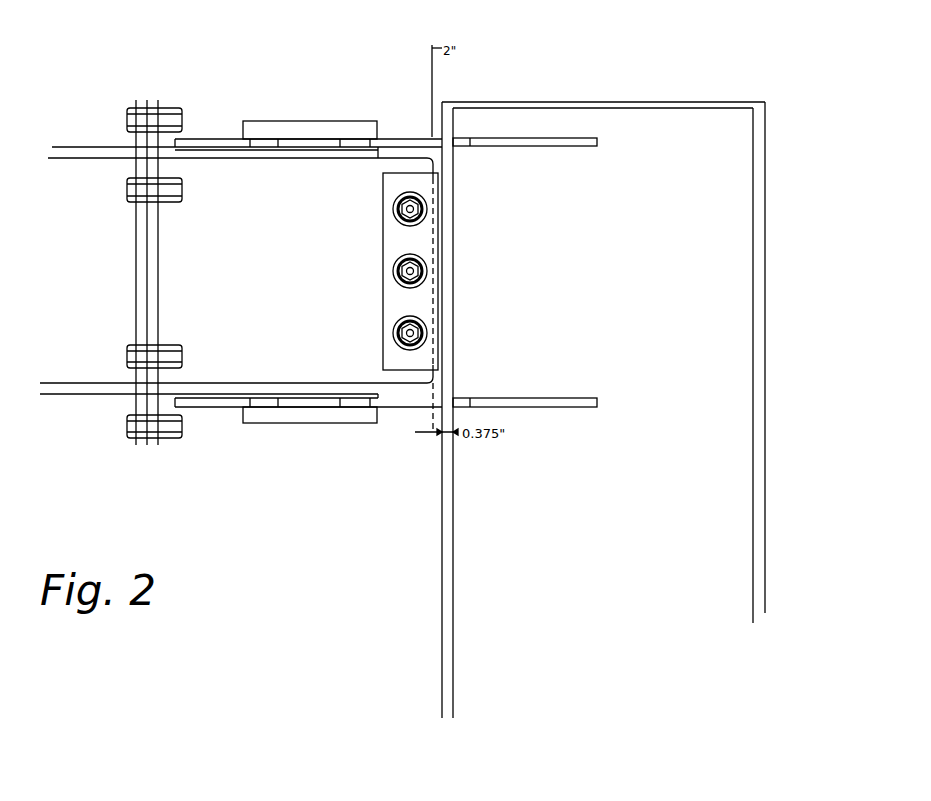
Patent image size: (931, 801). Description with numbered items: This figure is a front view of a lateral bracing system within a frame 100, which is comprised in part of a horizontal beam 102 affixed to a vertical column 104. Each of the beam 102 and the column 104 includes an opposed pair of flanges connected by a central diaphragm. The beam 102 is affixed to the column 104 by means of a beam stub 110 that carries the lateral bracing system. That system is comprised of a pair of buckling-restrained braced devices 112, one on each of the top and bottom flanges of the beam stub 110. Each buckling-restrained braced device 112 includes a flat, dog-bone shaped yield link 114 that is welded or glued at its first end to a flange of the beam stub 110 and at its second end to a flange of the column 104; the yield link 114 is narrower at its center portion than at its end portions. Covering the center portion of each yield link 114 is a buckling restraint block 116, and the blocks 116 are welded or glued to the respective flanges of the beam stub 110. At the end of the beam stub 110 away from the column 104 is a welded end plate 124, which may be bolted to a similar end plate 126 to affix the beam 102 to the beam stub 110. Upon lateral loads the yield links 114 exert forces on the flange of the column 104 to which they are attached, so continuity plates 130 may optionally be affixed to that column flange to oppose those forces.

The frame 100 is at (775, 68).
The horizontal beam 102 is at (102, 211).
The vertical column 104 is at (589, 499).
The beam stub 110 is at (274, 231).
The buckling-restrained braced device 112 is at (246, 88).
The yield link 114 is at (408, 138).
The buckling restraint block 116 is at (318, 120).
The end plate 124 is at (152, 105).
The end plate 126 is at (140, 105).
The continuity plate 130 is at (543, 147).